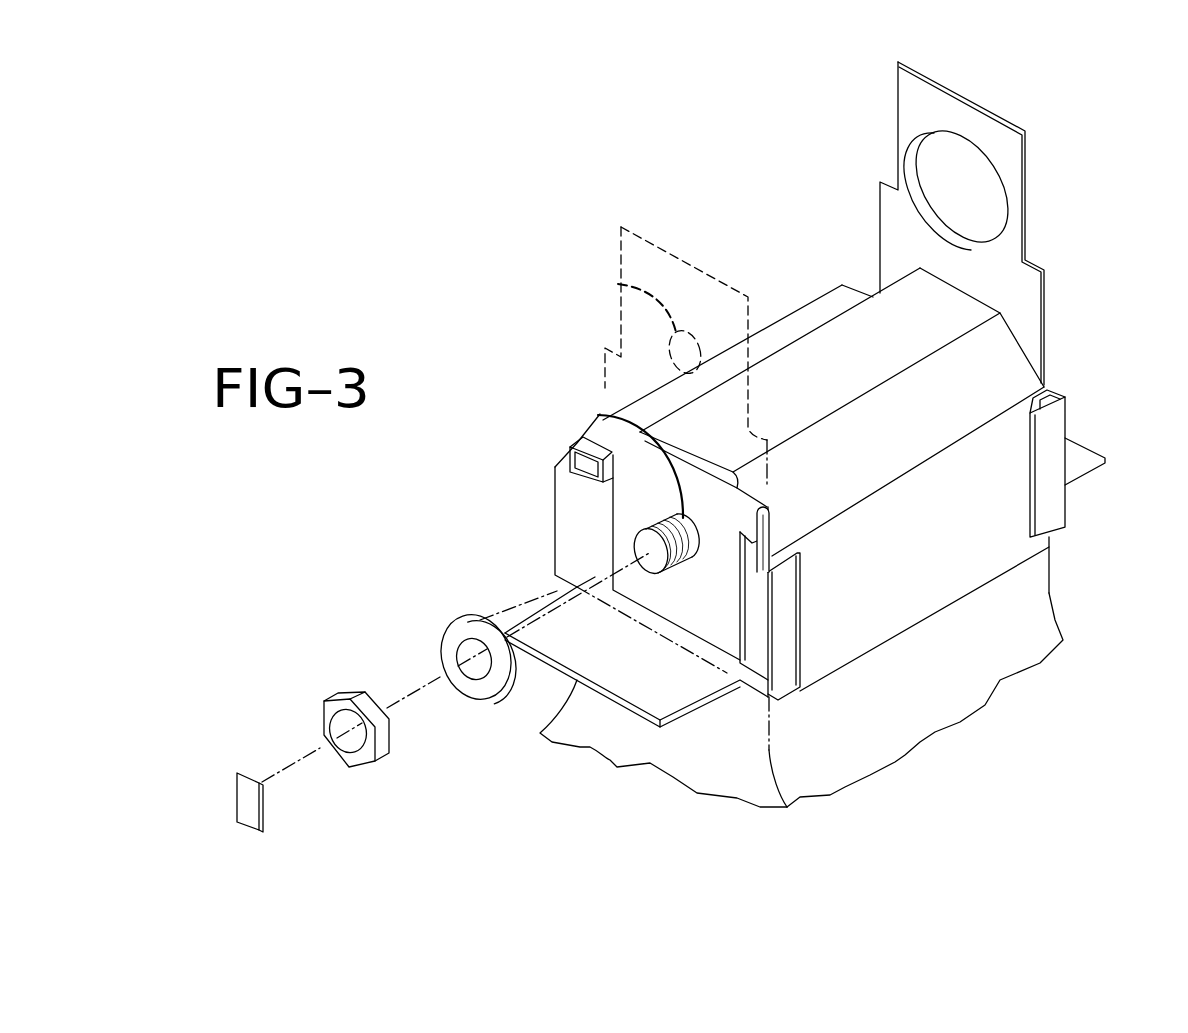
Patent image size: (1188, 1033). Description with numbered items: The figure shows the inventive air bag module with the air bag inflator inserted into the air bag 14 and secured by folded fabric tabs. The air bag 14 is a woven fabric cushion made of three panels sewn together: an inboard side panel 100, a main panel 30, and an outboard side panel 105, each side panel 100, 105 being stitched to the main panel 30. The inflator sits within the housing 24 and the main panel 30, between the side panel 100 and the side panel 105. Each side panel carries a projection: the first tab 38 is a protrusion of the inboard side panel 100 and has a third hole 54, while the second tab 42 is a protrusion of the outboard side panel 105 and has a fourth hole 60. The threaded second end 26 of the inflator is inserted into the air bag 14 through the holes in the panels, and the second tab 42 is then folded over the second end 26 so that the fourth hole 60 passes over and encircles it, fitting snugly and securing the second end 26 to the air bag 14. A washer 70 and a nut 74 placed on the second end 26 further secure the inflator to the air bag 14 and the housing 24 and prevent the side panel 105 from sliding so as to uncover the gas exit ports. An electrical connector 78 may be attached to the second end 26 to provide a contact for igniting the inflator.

The air bag 14 is at (988, 662).
The housing 24 is at (928, 551).
The second end 26 is at (645, 528).
The main panel 30 is at (926, 708).
The first tab 38 is at (898, 128).
The second tab 42 is at (613, 537).
The third hole 54 is at (981, 244).
The fourth hole 60 is at (598, 416).
The washer 70 is at (450, 637).
The nut 74 is at (327, 715).
The electrical connector 78 is at (237, 801).
The side panel 100 is at (1057, 587).
The side panel 105 is at (748, 758).